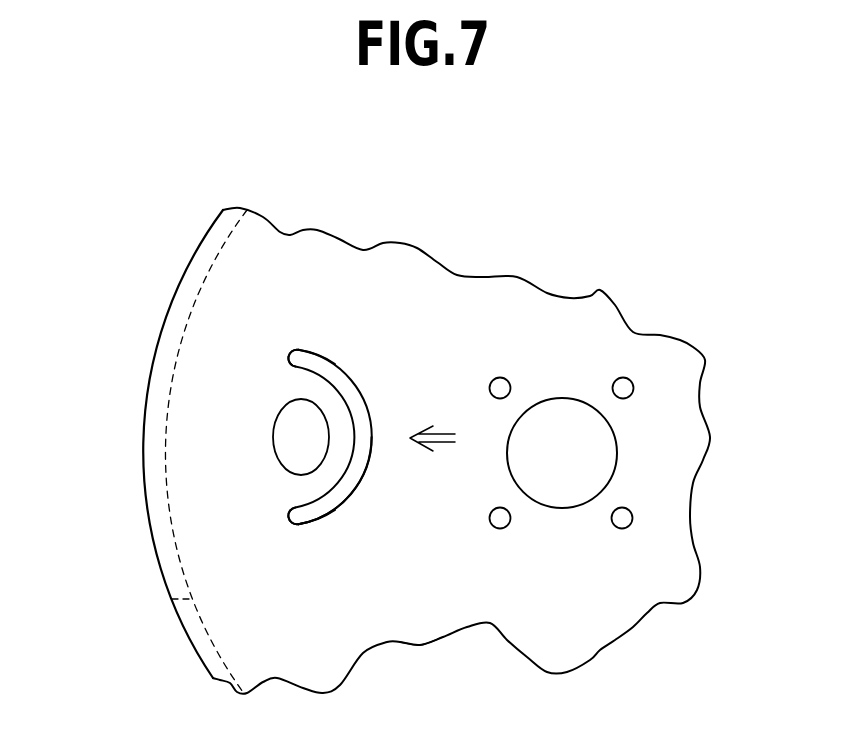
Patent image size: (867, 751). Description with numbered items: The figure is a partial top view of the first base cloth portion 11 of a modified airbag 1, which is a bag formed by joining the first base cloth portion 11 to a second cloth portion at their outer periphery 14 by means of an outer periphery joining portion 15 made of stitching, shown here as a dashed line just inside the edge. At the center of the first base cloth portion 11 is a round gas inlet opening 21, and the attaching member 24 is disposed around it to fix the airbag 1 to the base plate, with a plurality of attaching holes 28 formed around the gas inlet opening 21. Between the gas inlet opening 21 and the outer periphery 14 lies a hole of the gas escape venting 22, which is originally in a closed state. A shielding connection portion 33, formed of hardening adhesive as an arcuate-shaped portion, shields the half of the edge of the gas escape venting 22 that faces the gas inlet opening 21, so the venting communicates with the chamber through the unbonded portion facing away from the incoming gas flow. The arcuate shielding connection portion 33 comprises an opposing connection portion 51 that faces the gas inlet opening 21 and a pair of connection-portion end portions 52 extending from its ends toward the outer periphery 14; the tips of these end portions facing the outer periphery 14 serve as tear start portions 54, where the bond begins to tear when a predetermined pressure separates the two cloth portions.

The airbag 1 is at (604, 237).
The first base cloth portion 11 is at (340, 258).
The outer periphery 14 is at (150, 547).
The outer periphery joining portion 15 is at (170, 605).
The gas inlet opening 21 is at (600, 443).
The gas escape venting 22 is at (288, 428).
The attaching member 24 is at (568, 545).
The attaching holes 28 is at (503, 377).
The shielding connection portion 33 is at (357, 383).
The opposing connection portion 51 is at (352, 498).
The connection-portion end portions 52 is at (327, 347).
The tear start portions 54 is at (287, 355).